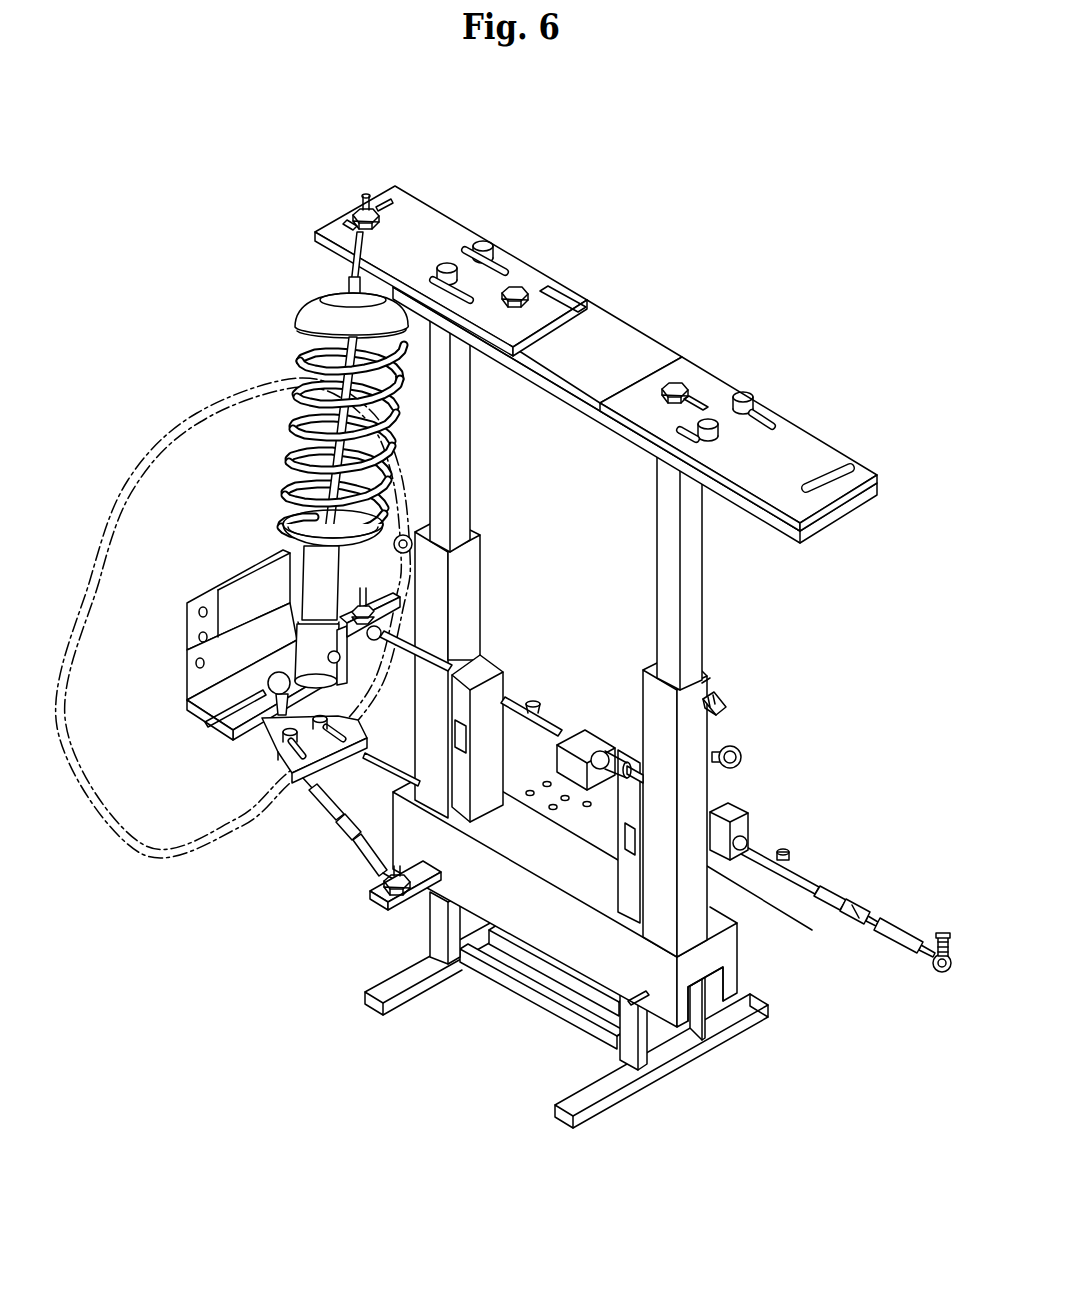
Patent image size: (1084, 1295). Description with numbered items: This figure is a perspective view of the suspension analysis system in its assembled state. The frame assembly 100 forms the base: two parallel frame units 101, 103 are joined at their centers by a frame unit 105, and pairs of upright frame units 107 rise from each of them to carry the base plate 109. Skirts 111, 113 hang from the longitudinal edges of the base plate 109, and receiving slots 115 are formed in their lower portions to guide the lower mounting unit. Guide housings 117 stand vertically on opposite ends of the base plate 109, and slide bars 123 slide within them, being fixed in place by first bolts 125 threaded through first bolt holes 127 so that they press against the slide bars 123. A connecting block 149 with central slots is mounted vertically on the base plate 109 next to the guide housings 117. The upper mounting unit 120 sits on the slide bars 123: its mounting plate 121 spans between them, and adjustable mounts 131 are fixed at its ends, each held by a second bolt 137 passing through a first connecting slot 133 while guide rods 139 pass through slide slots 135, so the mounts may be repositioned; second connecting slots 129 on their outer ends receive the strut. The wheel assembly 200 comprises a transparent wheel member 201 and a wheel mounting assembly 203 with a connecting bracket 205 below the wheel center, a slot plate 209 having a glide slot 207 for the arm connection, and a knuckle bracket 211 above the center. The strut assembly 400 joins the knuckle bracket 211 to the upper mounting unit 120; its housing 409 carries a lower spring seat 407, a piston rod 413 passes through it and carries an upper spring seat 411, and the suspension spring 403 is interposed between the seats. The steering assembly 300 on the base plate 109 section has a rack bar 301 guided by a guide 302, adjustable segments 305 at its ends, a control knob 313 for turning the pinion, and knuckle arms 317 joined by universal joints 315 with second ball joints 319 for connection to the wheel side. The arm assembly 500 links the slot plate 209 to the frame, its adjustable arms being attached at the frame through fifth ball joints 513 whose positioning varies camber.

The frame assembly 100 is at (619, 634).
The frame unit 101 is at (412, 992).
The frame unit 103 is at (593, 1113).
The frame unit 105 is at (537, 982).
The frame unit 107 is at (460, 950).
The base plate 109 is at (608, 921).
The skirt 111 is at (595, 975).
The skirt 113 is at (723, 987).
The receiving slot 115 is at (630, 1003).
The guide housing 117 is at (477, 572).
The upper mounting unit 120 is at (619, 412).
The mounting plate 121 is at (627, 338).
The slide bar 123 is at (463, 388).
The first bolt 125 is at (718, 700).
The first bolt hole 127 is at (707, 683).
The second connecting slot 129 is at (877, 433).
The adjustable mount 131 is at (405, 198).
The first connecting slot 133 is at (577, 293).
The slide slot 135 is at (432, 270).
The second bolt 137 is at (560, 287).
The guide rod 139 is at (457, 257).
The connecting block 149 is at (487, 668).
The wheel assembly 200 is at (233, 647).
The wheel member 201 is at (151, 862).
The wheel mounting assembly 203 is at (218, 661).
The connecting bracket 205 is at (224, 700).
The glide slot 207 is at (262, 723).
The slot plate 209 is at (185, 680).
The knuckle bracket 211 is at (242, 593).
The steering assembly 300 is at (726, 844).
The rack bar 301 is at (557, 723).
The guide 302 is at (587, 737).
The adjustable segment 305 is at (827, 873).
The control knob 313 is at (741, 757).
The universal joint 315 is at (851, 886).
The knuckle arm 317 is at (895, 930).
The second ball joint 319 is at (938, 970).
The strut assembly 400 is at (305, 460).
The suspension spring 403 is at (327, 360).
The lower spring seat 407 is at (293, 533).
The housing 409 is at (313, 570).
The upper spring seat 411 is at (303, 303).
The piston rod 413 is at (327, 387).
The arm assembly 500 is at (342, 860).
The fifth ball joint 513 is at (403, 903).